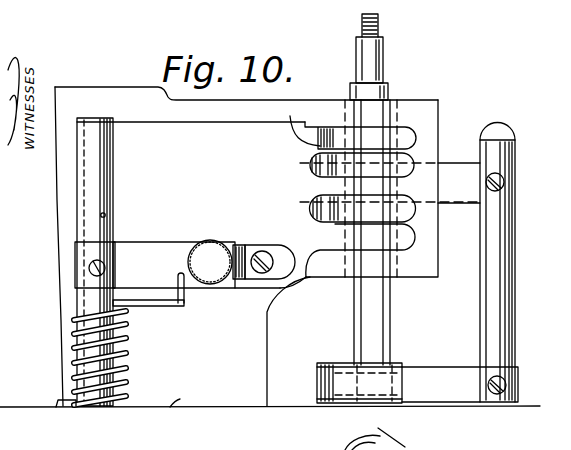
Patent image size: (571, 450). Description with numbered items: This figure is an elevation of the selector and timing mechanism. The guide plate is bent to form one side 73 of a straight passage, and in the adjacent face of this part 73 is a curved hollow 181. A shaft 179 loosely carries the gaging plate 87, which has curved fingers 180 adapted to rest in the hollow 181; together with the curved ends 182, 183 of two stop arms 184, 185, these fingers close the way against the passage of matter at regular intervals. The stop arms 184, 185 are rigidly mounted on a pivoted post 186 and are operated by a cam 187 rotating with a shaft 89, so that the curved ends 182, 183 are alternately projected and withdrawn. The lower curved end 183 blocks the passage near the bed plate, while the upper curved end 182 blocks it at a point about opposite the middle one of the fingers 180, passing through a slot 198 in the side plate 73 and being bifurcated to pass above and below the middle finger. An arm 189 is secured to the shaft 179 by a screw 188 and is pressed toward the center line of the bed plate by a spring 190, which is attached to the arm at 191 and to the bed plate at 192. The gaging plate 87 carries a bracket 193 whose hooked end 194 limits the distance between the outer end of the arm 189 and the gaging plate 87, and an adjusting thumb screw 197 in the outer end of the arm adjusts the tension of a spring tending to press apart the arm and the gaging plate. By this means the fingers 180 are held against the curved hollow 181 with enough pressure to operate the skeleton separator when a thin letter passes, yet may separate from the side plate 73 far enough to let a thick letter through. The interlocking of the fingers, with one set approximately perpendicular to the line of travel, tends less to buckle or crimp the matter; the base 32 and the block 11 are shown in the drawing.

The clamp block 11 is at (293, 130).
The base plate 32 is at (184, 395).
The side of straight passage 73 is at (187, 114).
The gaging plate 87 is at (193, 264).
The shaft 89 is at (391, 330).
The shaft 179 is at (85, 212).
The curved fingers 180 is at (322, 146).
The hollow 181 is at (397, 126).
The curved end 182 is at (312, 164).
The curved end 183 is at (323, 404).
The stop arm 184 is at (471, 183).
The stop arm 185 is at (460, 384).
The pivoted post 186 is at (513, 220).
The cam 187 is at (328, 368).
The screw 188 is at (90, 269).
The arm 189 is at (160, 274).
The spring 190 is at (127, 360).
The spring attachment point on arm 191 is at (186, 286).
The spring attachment point on bed plate 192 is at (57, 404).
The bracket 193 is at (262, 252).
The hooked end 194 is at (246, 246).
The adjusting thumb screw 197 is at (209, 249).
The slot 198 is at (313, 203).